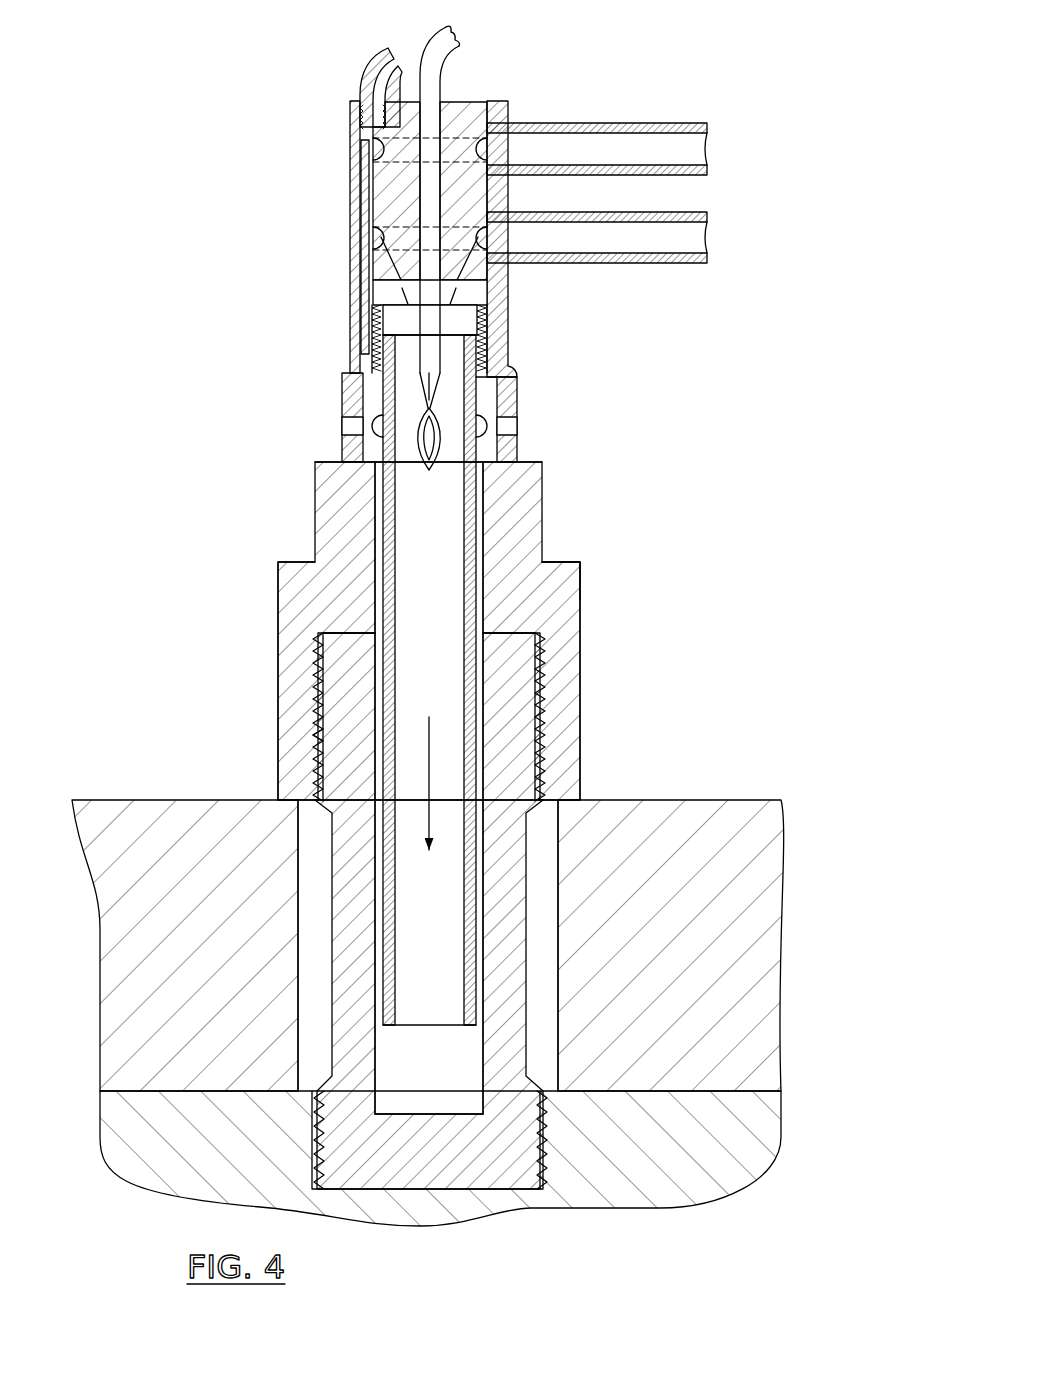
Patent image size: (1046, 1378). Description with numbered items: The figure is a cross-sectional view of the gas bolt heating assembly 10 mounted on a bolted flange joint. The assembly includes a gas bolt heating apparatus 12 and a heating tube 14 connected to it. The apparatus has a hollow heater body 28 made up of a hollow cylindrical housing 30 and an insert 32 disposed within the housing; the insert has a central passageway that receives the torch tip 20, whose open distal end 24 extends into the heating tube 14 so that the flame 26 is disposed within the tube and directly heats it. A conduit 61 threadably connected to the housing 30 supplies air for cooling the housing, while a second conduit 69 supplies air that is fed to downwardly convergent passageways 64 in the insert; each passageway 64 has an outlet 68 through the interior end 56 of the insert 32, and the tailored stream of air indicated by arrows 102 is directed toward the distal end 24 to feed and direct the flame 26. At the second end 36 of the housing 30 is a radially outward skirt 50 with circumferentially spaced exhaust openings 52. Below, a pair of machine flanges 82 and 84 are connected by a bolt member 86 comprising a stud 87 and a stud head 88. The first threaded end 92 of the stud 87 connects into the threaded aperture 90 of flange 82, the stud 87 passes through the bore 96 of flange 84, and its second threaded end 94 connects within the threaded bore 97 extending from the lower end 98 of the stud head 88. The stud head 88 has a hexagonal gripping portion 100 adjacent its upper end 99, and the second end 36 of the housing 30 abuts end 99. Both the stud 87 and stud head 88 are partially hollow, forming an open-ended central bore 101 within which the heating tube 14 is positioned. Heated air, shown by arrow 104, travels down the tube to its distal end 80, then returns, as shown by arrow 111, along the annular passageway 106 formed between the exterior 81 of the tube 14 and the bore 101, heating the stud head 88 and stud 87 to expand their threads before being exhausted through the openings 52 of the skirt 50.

The gas bolt heating assembly 10 is at (152, 95).
The gas bolt heating apparatus 12 is at (291, 143).
The heating tube 14 is at (470, 798).
The torch tip 20 is at (447, 68).
The distal end of the torch tip 24 is at (427, 407).
The flame 26 is at (417, 443).
The heater body 28 is at (344, 130).
The housing 30 is at (500, 311).
The insert 32 is at (378, 168).
The second end of the housing 36 is at (527, 470).
The skirt 50 is at (522, 388).
The exhaust openings 52 is at (505, 427).
The interior end of the insert 56 is at (477, 288).
The conduit 61 is at (628, 122).
The passageway 64 is at (378, 262).
The outlet 68 is at (386, 283).
The conduit 69 is at (626, 212).
The distal end of the heating tube 80 is at (467, 1028).
The exterior of the heating tube 81 is at (473, 615).
The flange 82 is at (753, 1123).
The flange 84 is at (757, 826).
The bolt member 86 is at (596, 556).
The stud 87 is at (545, 690).
The stud head 88 is at (588, 578).
The threaded aperture 90 is at (549, 1137).
The first threaded end of the stud 92 is at (540, 1138).
The second threaded end of the stud 94 is at (320, 668).
The bore 96 is at (562, 877).
The threaded bore 97 is at (316, 742).
The lower end of the stud head 98 is at (285, 835).
The upper end of the stud head 99 is at (332, 462).
The hexagonal gripping portion 100 is at (315, 522).
The central bore 101 is at (375, 602).
The arrows 102 is at (403, 302).
The arrow 104 is at (428, 810).
The annular passageway 106 is at (480, 762).
The arrow 111 is at (404, 1005).